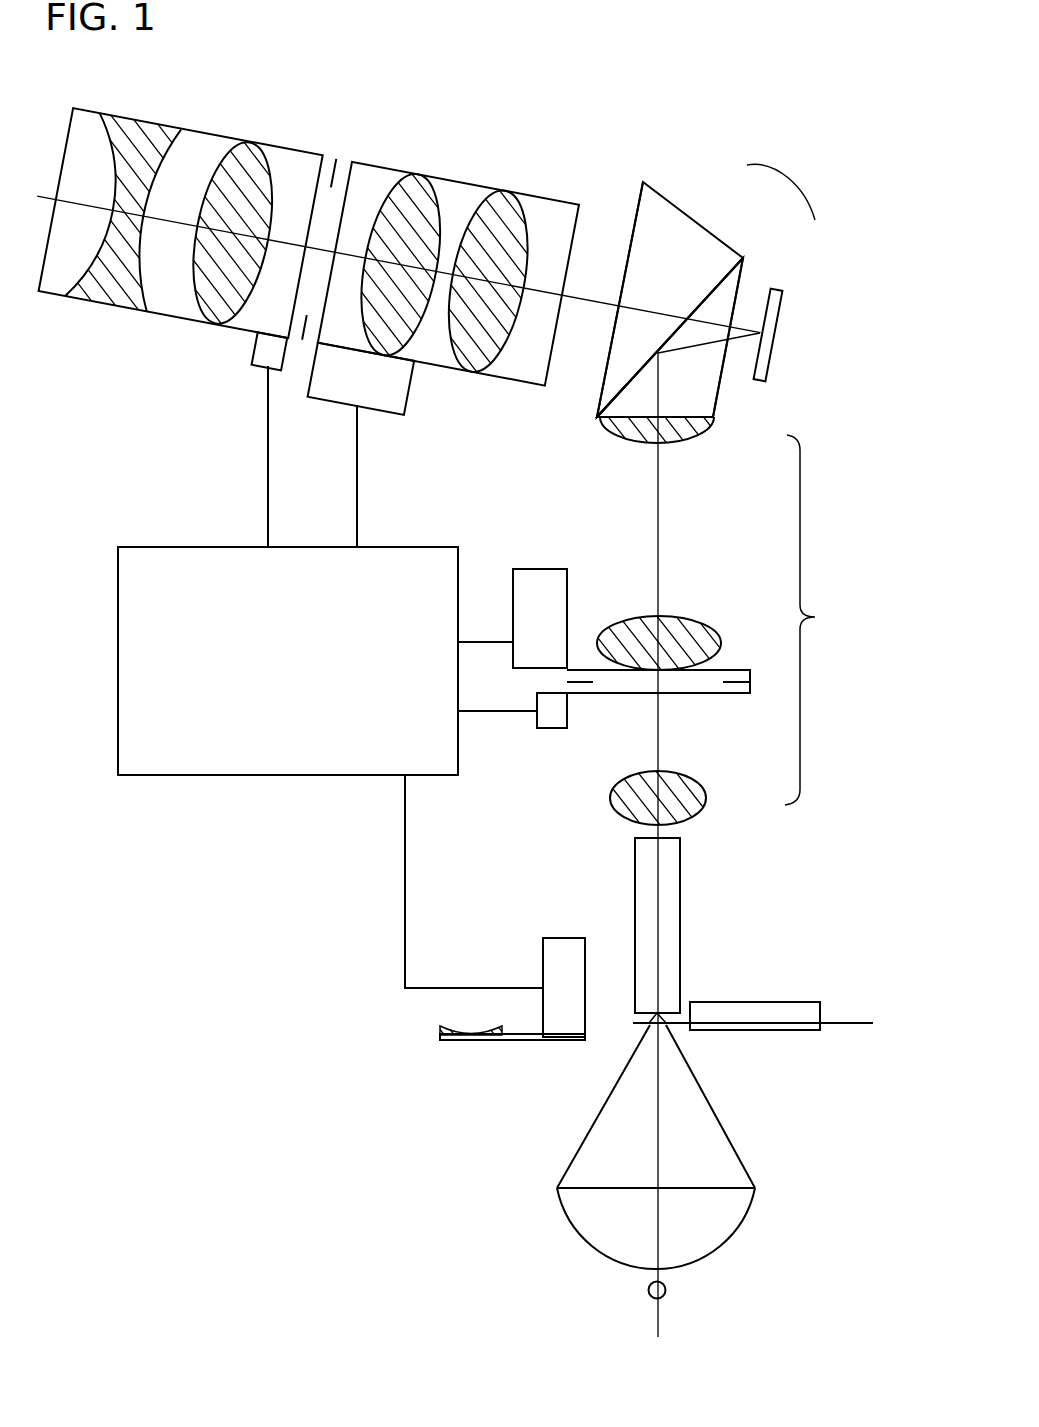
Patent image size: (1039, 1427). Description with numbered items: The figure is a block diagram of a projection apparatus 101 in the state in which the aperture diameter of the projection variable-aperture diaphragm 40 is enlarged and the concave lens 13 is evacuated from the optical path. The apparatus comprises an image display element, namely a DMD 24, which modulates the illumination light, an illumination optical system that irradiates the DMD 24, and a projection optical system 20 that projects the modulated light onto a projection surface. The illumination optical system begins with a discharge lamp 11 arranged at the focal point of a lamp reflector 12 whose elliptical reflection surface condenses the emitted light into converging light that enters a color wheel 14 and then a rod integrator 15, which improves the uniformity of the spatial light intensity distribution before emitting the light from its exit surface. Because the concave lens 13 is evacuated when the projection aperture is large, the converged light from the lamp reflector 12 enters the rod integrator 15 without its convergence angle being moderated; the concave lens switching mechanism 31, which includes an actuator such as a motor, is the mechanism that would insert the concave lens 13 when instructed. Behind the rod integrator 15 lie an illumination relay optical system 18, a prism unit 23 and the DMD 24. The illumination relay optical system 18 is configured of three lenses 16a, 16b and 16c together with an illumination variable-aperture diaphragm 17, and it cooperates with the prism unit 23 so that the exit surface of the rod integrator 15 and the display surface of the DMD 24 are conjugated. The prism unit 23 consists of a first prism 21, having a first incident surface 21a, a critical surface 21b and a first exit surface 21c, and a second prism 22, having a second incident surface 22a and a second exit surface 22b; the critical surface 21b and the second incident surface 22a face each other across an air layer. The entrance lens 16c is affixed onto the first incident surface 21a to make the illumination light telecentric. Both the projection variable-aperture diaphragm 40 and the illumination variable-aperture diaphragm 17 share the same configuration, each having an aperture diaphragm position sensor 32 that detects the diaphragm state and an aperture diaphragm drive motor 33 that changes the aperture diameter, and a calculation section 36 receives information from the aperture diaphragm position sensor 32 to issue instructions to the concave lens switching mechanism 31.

The projection apparatus 101 is at (687, 150).
The discharge lamp 11 is at (666, 1292).
The lamp reflector 12 is at (588, 1273).
The concave lens 13 is at (458, 1042).
The color wheel 14 is at (755, 1010).
The rod integrator 15 is at (670, 910).
The lens 16a is at (695, 793).
The lens 16b is at (703, 640).
The entrance lens 16c is at (693, 427).
The illumination variable-aperture diaphragm 17 is at (708, 692).
The illumination relay optical system 18 is at (820, 620).
The projection optical system 20 is at (212, 145).
The first prism 21 is at (738, 293).
The first incident surface 21a is at (690, 417).
The critical surface 21b is at (627, 390).
The first exit surface 21c is at (740, 306).
The second prism 22 is at (683, 226).
The second incident surface 22a is at (703, 300).
The second exit surface 22b is at (630, 233).
The prism unit 23 is at (781, 189).
The DMD 24 is at (775, 318).
The concave lens switching mechanism 31 is at (565, 945).
The aperture diaphragm position sensor 32 is at (257, 348).
The aperture diaphragm drive motor 33 is at (398, 392).
The calculation section 36 is at (133, 662).
The projection variable-aperture diaphragm 40 is at (337, 182).